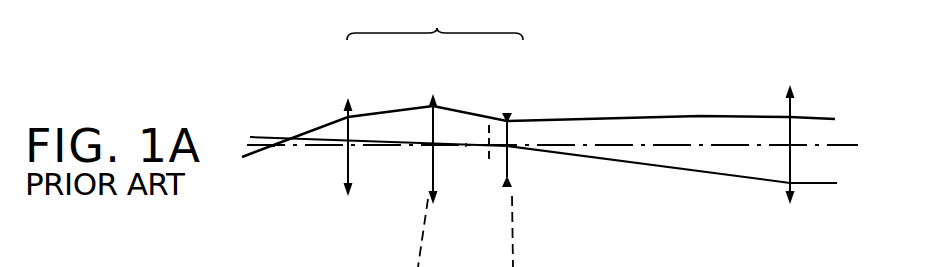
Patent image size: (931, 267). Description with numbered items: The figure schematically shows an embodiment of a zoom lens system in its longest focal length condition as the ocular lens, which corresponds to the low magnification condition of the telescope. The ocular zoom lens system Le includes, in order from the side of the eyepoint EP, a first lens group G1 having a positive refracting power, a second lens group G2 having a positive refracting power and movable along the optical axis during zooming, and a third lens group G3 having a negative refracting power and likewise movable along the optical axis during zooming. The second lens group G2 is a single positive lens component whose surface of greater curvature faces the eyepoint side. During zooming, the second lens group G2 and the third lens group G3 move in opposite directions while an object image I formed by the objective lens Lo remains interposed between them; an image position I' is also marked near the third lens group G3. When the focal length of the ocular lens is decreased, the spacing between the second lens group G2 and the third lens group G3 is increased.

The ocular zoom lens system Le is at (435, 20).
The first lens group G1 is at (348, 98).
The second lens group G2 is at (433, 93).
The third lens group G3 is at (507, 113).
The objective lens Lo is at (787, 123).
The eyepoint EP is at (273, 147).
The object image I is at (455, 182).
The shifted intermediate image position I' is at (482, 173).